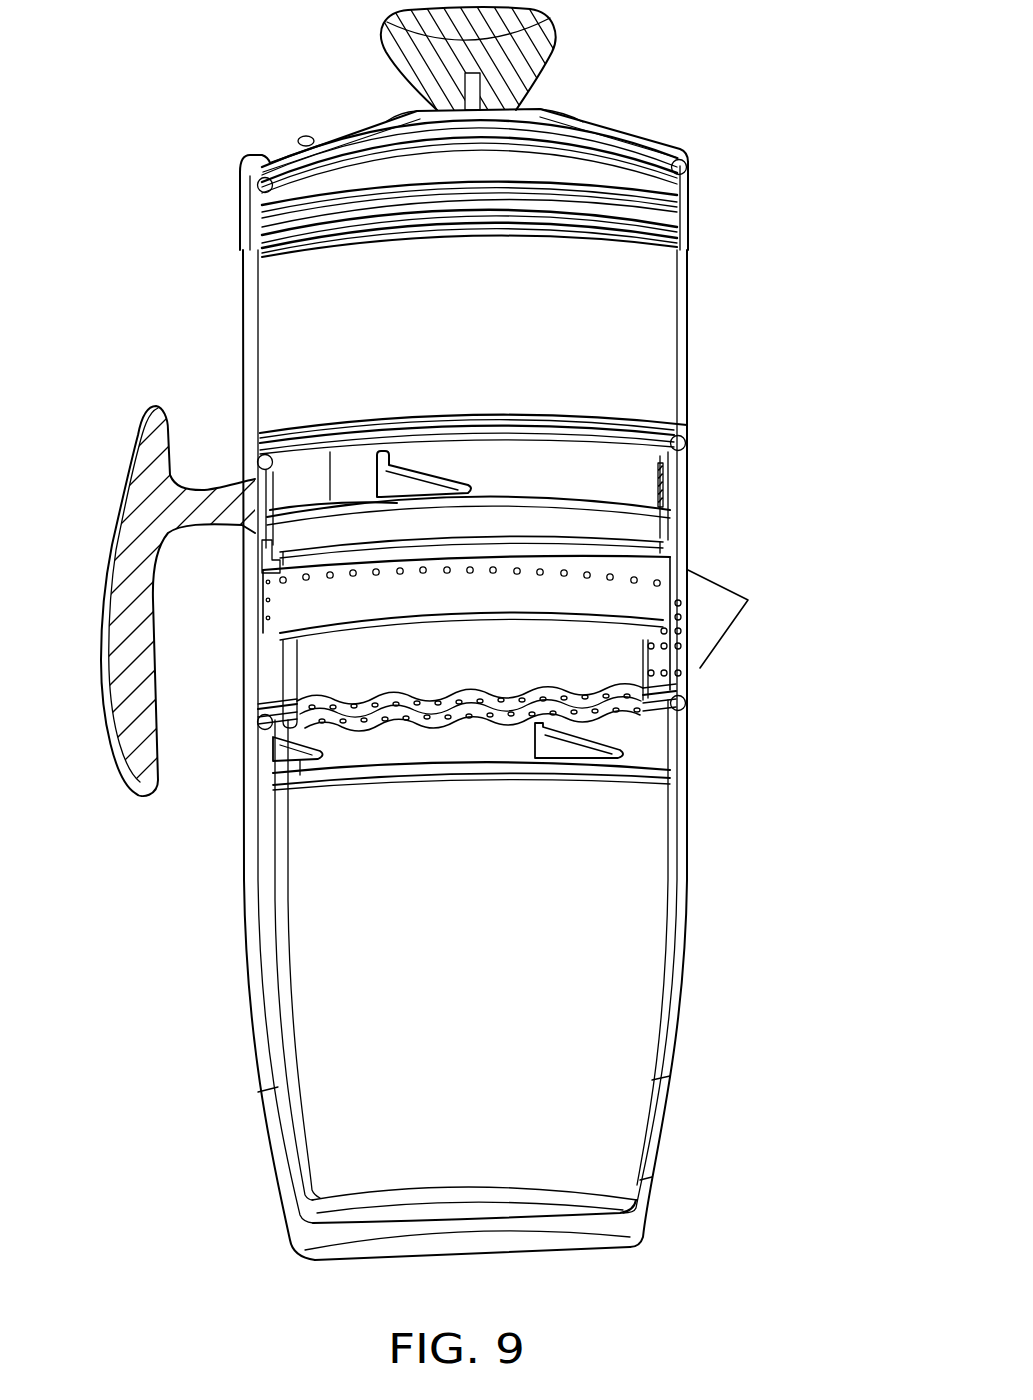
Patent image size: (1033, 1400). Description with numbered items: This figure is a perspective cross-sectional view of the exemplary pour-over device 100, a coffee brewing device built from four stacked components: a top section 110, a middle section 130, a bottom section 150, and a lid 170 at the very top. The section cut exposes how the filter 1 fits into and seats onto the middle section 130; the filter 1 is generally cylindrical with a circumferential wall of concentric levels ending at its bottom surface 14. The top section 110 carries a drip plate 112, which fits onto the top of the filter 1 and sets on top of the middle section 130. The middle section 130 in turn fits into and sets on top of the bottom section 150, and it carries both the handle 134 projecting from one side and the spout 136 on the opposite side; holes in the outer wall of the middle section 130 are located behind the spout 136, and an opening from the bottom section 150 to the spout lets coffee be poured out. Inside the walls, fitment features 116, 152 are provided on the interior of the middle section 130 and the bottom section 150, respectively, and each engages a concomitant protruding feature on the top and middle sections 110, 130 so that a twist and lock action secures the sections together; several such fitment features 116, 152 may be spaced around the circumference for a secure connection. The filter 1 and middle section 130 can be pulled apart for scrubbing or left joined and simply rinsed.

The pour-over device 100 is at (447, 630).
The lid 170 is at (558, 32).
The top section 110 is at (690, 318).
The fitment feature 116 is at (410, 467).
The drip plate 112 is at (543, 550).
The filter 1 is at (687, 567).
The middle section 130 is at (688, 571).
The spout 136 is at (713, 630).
The handle 134 is at (123, 505).
The bottom surface 14 is at (275, 748).
The fitment feature 152 is at (282, 760).
The bottom section 150 is at (690, 920).